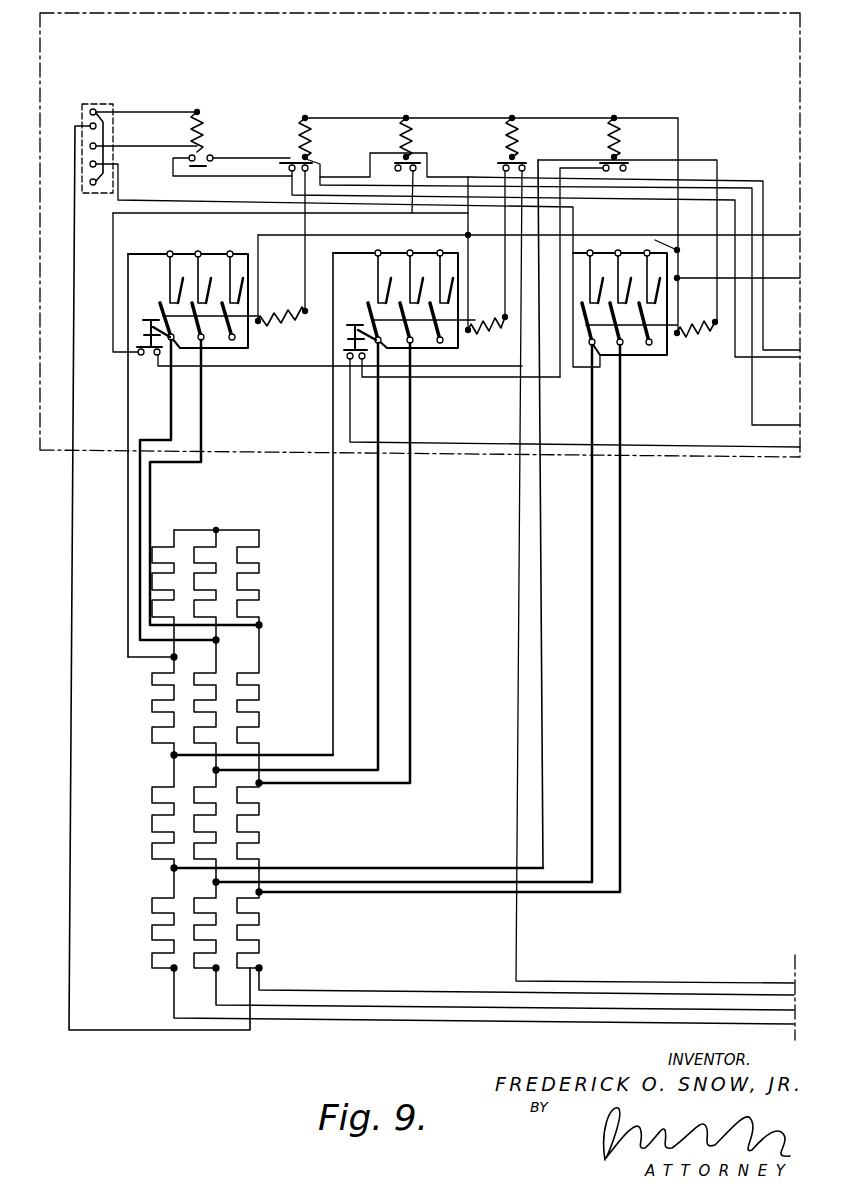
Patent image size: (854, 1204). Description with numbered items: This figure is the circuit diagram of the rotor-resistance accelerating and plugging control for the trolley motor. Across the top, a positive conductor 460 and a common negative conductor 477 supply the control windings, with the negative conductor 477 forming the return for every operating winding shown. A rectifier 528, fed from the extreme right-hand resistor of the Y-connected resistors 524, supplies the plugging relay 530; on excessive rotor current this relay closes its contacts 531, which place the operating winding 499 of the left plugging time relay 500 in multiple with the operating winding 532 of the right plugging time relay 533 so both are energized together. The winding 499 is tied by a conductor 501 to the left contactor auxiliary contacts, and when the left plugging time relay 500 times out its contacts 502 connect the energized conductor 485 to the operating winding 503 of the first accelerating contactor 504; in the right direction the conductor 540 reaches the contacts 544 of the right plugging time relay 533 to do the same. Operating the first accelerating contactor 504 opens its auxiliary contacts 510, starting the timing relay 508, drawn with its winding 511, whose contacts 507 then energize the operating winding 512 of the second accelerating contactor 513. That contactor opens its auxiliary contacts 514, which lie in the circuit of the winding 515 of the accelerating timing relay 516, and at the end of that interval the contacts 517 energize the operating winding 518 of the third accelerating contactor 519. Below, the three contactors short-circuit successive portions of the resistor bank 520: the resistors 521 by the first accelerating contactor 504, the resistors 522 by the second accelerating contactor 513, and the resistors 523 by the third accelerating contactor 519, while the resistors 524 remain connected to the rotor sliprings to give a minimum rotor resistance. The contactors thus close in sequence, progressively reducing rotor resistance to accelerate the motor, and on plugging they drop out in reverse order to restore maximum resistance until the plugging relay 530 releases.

The conductor 460 is at (705, 447).
The rectifier 528 is at (110, 78).
The plugging relay 530 is at (207, 108).
The contacts of plugging relay 531 is at (212, 162).
The left plugging time relay 500 is at (310, 108).
The operating winding of left plugging time relay 499 is at (297, 128).
The negative conductor 477 is at (356, 112).
The contacts of left plugging time relay 502 is at (290, 162).
The conductor 501 is at (320, 164).
The conductor 485 is at (290, 190).
The right plugging time relay 533 is at (418, 110).
The operating winding of right plugging time relay 532 is at (420, 140).
The contacts of right plugging time relay 544 is at (416, 166).
The timing relay 508 is at (527, 98).
The resistor 511 is at (506, 132).
The contacts of timing relay 507 is at (506, 165).
The accelerating timing relay 516 is at (620, 111).
The winding of accelerating timing relay 515 is at (621, 134).
The contacts of accelerating timing relay 517 is at (626, 168).
The conductor 540 is at (413, 236).
The first accelerating contactor 504 is at (213, 247).
The operating winding of first accelerating contactor 503 is at (273, 329).
The auxiliary contacts of first accelerating contactor 510 is at (150, 358).
The auxiliary contacts of second accelerating contactor 514 is at (347, 356).
The operating winding of second accelerating contactor 512 is at (490, 309).
The second accelerating contactor 513 is at (468, 347).
The third accelerating contactor 519 is at (656, 365).
The operating winding of third accelerating contactor 518 is at (694, 337).
The resistor bank 520 is at (228, 526).
The resistors 521 is at (202, 546).
The resistors 522 is at (192, 692).
The resistors 523 is at (192, 829).
The resistors 524 is at (152, 930).